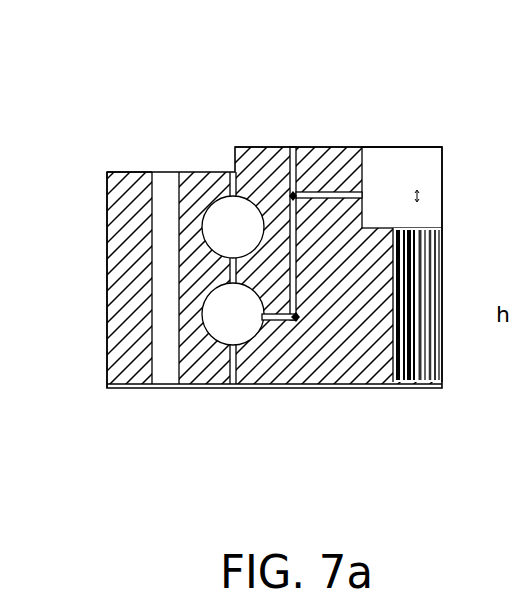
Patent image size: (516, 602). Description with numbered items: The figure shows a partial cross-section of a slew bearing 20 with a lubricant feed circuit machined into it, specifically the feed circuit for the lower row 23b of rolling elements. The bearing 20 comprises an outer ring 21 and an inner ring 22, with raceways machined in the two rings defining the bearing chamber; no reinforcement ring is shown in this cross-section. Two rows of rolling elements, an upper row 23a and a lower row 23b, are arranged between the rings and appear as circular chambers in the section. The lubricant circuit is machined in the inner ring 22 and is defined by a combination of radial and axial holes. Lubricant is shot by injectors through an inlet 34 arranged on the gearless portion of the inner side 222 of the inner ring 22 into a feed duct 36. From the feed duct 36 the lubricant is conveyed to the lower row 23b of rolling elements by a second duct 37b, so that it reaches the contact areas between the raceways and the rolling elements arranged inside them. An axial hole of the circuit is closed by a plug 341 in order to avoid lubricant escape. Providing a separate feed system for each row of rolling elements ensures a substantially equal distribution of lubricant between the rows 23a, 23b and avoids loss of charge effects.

The bearing 20 is at (128, 144).
The outer ring 21 is at (118, 372).
The inner ring 22 is at (352, 357).
The upper row of rolling elements 23a is at (238, 225).
The lower row of rolling elements 23b is at (237, 318).
The inlet 34 is at (365, 196).
The feed duct 36 is at (322, 195).
The second duct 37b is at (273, 319).
The inner side of the inner ring 222 is at (374, 147).
The plug 341 is at (293, 147).